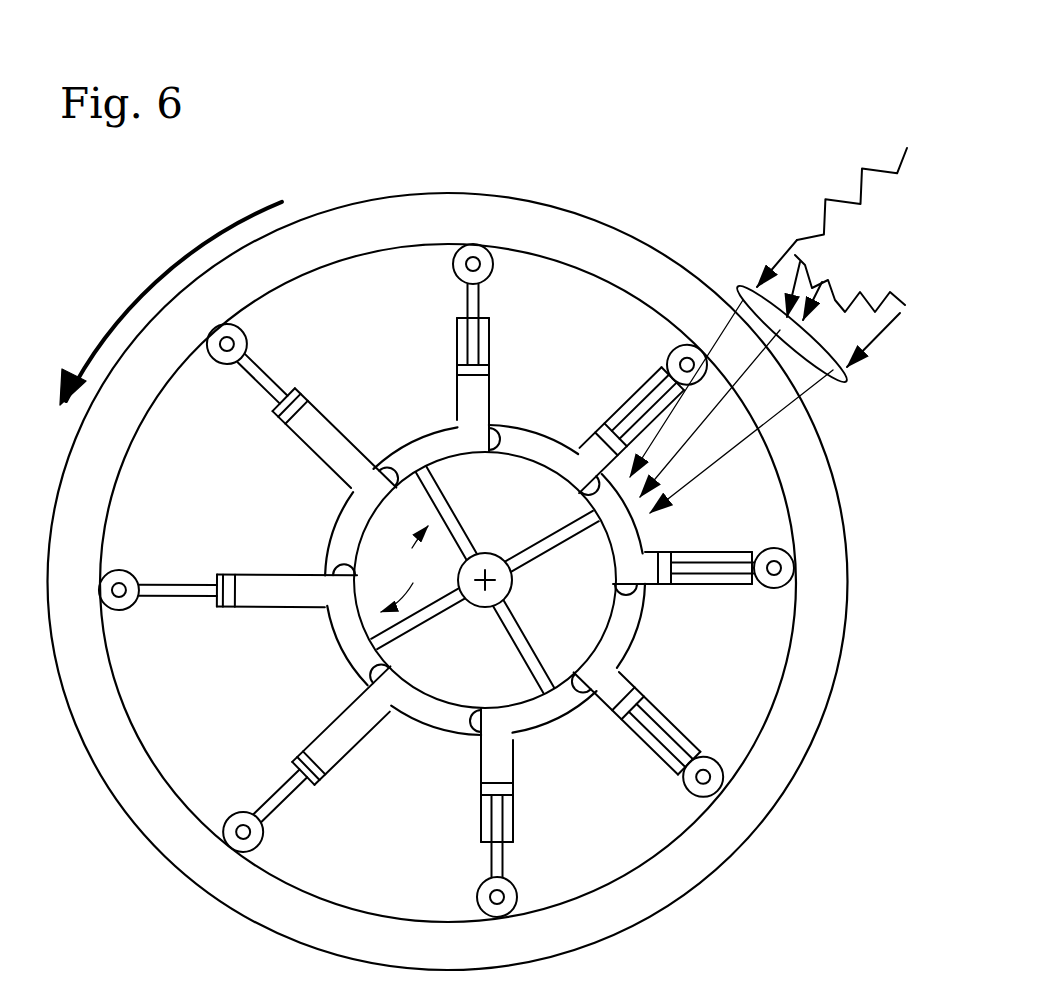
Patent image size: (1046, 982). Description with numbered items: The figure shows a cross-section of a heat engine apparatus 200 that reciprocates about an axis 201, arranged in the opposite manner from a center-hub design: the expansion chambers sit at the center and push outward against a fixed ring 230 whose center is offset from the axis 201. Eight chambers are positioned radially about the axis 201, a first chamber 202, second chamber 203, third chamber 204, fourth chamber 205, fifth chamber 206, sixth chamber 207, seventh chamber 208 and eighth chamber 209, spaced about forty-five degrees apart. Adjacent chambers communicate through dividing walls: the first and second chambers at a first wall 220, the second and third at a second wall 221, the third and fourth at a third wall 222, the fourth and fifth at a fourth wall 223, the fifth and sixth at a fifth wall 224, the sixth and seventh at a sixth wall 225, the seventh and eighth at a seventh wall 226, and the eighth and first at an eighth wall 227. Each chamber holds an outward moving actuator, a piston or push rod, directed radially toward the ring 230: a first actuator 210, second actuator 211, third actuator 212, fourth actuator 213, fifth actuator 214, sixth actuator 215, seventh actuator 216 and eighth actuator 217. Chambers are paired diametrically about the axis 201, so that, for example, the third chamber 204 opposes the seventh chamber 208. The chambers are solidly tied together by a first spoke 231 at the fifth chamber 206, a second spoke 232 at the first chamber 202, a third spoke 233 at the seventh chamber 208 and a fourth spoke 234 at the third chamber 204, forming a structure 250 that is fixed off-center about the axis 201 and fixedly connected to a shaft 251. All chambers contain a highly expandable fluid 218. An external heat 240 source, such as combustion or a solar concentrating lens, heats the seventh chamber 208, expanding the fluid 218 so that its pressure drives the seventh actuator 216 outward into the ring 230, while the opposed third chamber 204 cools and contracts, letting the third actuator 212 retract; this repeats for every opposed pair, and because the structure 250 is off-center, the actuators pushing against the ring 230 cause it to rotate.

The apparatus 200 is at (752, 46).
The axis 201 is at (494, 569).
The first chamber 202 is at (585, 712).
The second chamber 203 is at (452, 745).
The third chamber 204 is at (355, 670).
The fourth chamber 205 is at (340, 510).
The fifth chamber 206 is at (395, 458).
The sixth chamber 207 is at (505, 428).
The seventh chamber 208 is at (655, 550).
The eighth chamber 209 is at (650, 668).
The first actuator 210 is at (550, 825).
The second actuator 211 is at (352, 792).
The third actuator 212 is at (217, 646).
The fourth actuator 213 is at (238, 440).
The fifth actuator 214 is at (403, 343).
The sixth actuator 215 is at (603, 370).
The seventh actuator 216 is at (729, 600).
The eighth actuator 217 is at (697, 707).
The fluid 218 is at (440, 437).
The first wall 220 is at (504, 712).
The second wall 221 is at (390, 649).
The third wall 222 is at (340, 563).
The fourth wall 223 is at (384, 486).
The fifth wall 224 is at (481, 442).
The sixth wall 225 is at (550, 462).
The seventh wall 226 is at (624, 572).
The eighth wall 227 is at (600, 650).
The ring 230 is at (470, 183).
The first spoke 231 is at (457, 503).
The second spoke 232 is at (520, 652).
The third spoke 233 is at (575, 518).
The fourth spoke 234 is at (430, 622).
The heat 240 is at (855, 395).
The structure 250 is at (406, 569).
The shaft 251 is at (518, 590).